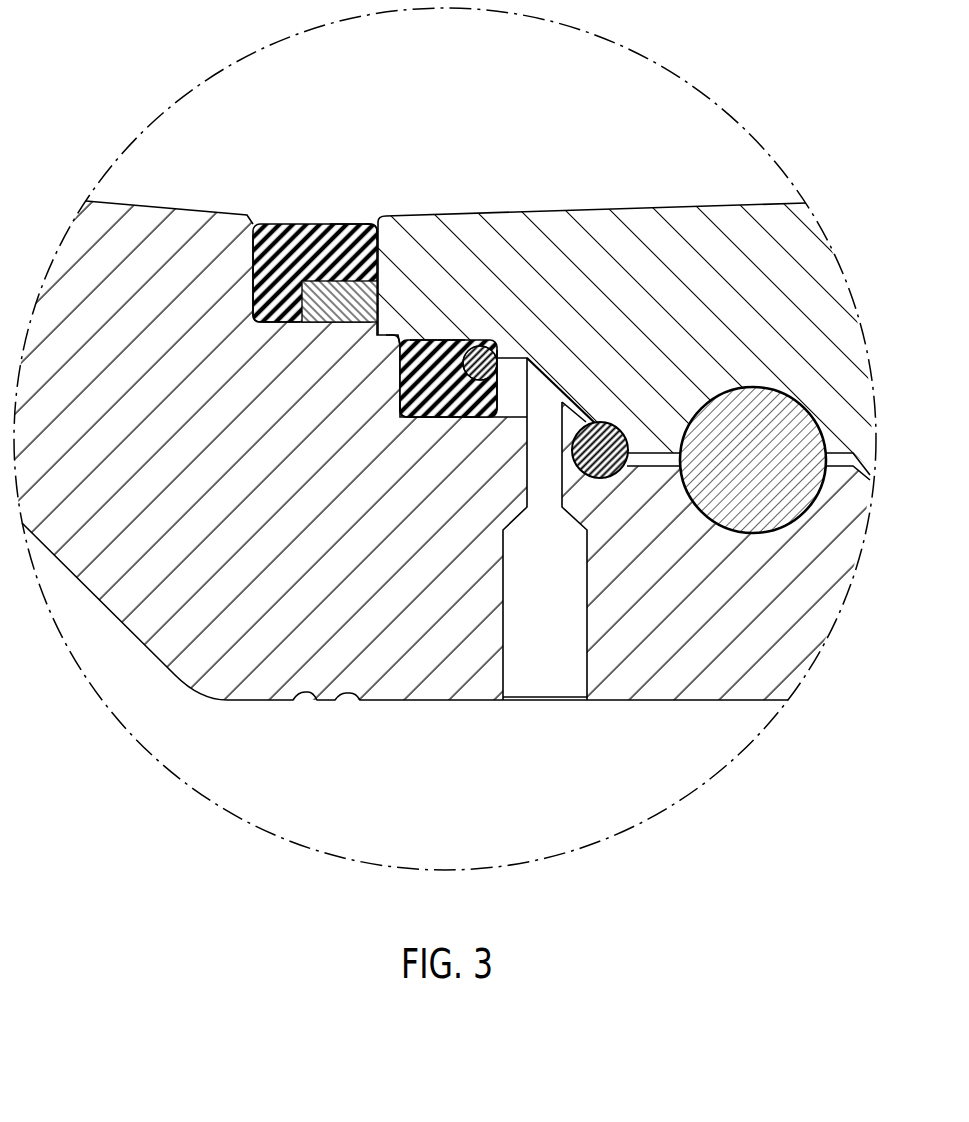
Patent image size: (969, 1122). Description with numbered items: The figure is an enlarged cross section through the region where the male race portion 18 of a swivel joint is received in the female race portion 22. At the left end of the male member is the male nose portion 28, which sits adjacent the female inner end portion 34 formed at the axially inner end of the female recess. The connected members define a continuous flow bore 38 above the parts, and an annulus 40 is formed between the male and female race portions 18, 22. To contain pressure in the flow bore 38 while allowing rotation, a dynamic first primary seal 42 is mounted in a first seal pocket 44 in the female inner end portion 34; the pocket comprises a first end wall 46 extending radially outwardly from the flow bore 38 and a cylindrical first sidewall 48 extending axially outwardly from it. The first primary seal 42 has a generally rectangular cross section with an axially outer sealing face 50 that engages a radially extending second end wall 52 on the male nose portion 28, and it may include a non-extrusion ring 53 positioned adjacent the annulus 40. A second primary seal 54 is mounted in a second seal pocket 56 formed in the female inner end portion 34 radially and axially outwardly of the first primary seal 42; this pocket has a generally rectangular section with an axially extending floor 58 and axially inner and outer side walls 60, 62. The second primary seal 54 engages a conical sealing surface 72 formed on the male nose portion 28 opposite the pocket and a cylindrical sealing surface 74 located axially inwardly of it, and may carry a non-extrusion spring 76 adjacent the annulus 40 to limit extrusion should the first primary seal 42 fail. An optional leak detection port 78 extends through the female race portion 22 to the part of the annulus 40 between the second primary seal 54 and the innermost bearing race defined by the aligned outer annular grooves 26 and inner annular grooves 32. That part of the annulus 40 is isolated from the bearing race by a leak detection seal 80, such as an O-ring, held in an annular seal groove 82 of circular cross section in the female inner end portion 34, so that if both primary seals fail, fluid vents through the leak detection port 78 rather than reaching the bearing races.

The male race portion 18 is at (638, 203).
The female race portion 22 is at (709, 711).
The outer annular grooves 26 is at (812, 504).
The male nose portion 28 is at (580, 297).
The inner annular grooves 32 is at (802, 410).
The female inner end portion 34 is at (244, 479).
The flow bore 38 is at (494, 154).
The annulus 40 is at (376, 333).
The first primary seal 42 is at (310, 216).
The first seal pocket 44 is at (246, 326).
The first end wall 46 is at (256, 251).
The first sidewall 48 is at (288, 322).
The axially outer sealing face 50 is at (380, 229).
The second end wall 52 is at (362, 232).
The non-extrusion ring 53 is at (335, 322).
The second primary seal 54 is at (471, 334).
The second seal pocket 56 is at (414, 427).
The floor 58 is at (455, 419).
The axially inner side wall 60 is at (402, 415).
The axially outer side wall 62 is at (489, 420).
The conical sealing surface 72 is at (440, 342).
The cylindrical sealing surface 74 is at (386, 338).
The non-extrusion spring 76 is at (496, 356).
The leak detection port 78 is at (585, 668).
The leak detection seal 80 is at (619, 426).
The annular seal groove 82 is at (600, 479).